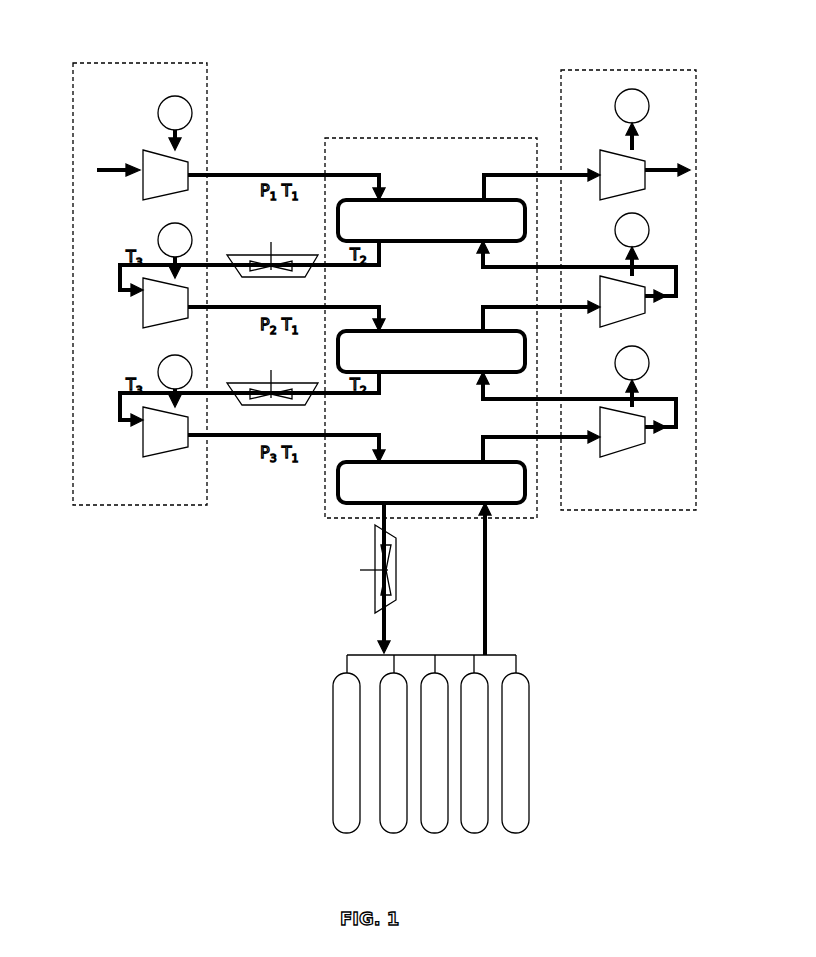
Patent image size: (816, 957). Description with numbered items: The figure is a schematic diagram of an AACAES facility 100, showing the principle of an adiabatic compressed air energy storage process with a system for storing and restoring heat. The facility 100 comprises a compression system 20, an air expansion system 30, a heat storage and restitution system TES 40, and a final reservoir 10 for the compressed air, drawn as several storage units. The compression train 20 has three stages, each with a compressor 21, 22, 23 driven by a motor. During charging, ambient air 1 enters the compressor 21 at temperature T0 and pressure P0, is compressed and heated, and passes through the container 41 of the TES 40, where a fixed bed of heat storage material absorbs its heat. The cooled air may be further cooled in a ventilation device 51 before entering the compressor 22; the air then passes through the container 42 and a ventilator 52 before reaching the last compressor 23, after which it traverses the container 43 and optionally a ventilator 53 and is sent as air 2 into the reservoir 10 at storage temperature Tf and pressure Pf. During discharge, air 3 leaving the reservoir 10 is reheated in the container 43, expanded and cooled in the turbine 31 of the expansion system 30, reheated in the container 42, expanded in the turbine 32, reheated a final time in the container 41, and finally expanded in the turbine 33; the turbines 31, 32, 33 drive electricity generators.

The AACAES facility 100 is at (108, 38).
The air 1 is at (116, 168).
The air 2 is at (378, 635).
The air 3 is at (490, 634).
The final reservoir 10 is at (560, 655).
The compression system 20 is at (205, 63).
The compressor 21 is at (143, 188).
The compressor 22 is at (143, 306).
The compressor 23 is at (143, 440).
The air expansion system 30 is at (640, 70).
The turbine 31 is at (638, 436).
The turbine 32 is at (638, 304).
The turbine 33 is at (638, 182).
The TES 40 is at (440, 138).
The container 41 is at (430, 200).
The container 42 is at (430, 331).
The container 43 is at (430, 462).
The ventilation device 51 is at (262, 255).
The ventilator 52 is at (262, 383).
The ventilator 53 is at (376, 566).